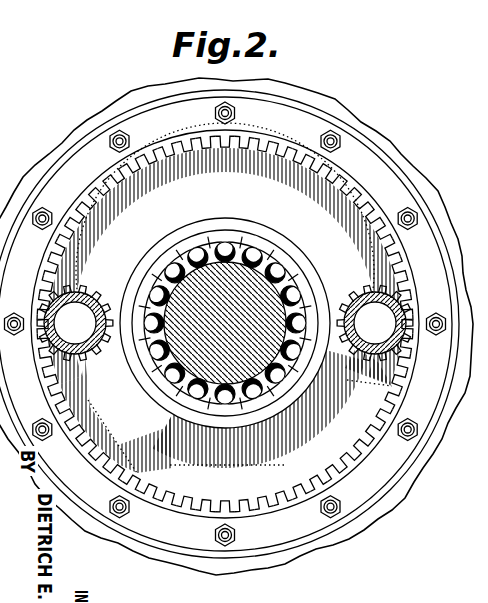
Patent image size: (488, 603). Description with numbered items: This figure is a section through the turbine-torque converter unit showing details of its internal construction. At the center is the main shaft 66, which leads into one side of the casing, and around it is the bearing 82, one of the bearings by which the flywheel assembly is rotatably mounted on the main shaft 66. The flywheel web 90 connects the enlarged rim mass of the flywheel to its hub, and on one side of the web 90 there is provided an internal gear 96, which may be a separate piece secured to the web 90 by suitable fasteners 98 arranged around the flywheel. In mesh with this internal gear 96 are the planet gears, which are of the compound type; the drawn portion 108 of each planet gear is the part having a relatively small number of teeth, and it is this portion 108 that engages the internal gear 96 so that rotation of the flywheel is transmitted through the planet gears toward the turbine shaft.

The web 90 is at (237, 567).
The internal gear 96 is at (281, 497).
The fasteners 98 is at (343, 136).
The bearing 82 is at (234, 231).
The main shaft 66 is at (258, 250).
The portion of planet gear with relatively small number of teeth 108 is at (113, 262).